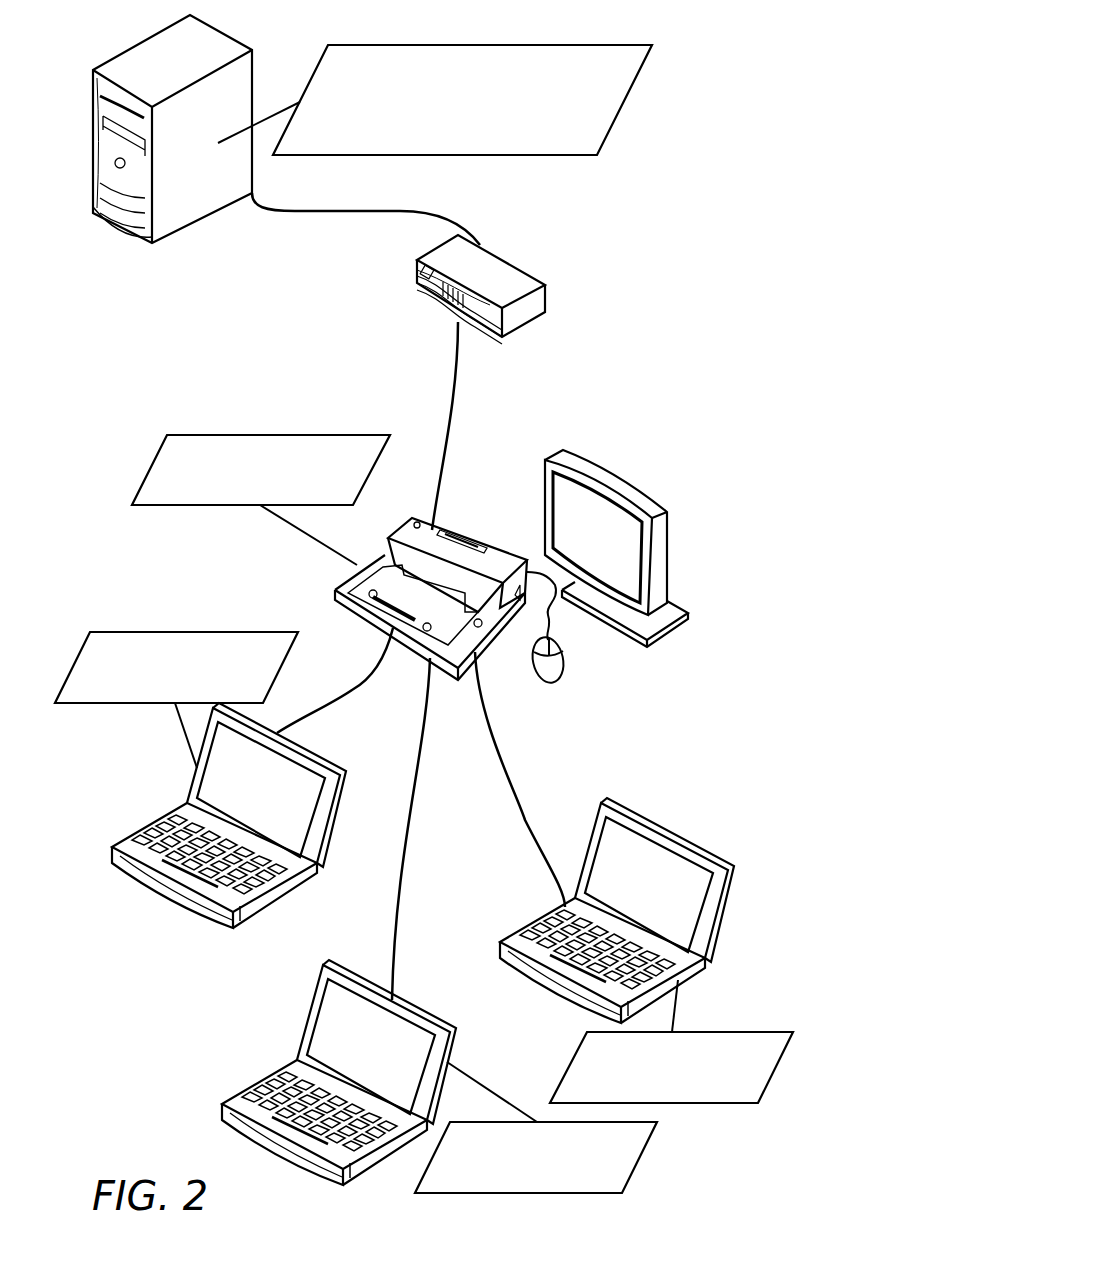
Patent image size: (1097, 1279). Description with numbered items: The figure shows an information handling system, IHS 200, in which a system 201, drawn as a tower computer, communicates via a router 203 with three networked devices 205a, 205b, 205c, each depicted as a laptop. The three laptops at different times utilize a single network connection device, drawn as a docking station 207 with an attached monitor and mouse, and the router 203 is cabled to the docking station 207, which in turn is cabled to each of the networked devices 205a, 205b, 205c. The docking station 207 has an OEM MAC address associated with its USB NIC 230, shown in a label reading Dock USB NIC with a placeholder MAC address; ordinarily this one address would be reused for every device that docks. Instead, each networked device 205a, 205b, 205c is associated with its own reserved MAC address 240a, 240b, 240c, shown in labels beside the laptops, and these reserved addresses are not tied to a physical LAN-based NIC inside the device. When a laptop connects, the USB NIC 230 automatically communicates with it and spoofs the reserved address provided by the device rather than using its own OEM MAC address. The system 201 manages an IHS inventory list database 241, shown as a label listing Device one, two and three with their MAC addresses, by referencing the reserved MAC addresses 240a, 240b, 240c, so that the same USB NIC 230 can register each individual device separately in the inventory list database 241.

The IHS 200 is at (802, 32).
The system 201 is at (190, 227).
The router 203 is at (525, 268).
The docking station 207 is at (463, 543).
The USB NIC 230 is at (353, 432).
The IHS inventory list database 241 is at (627, 97).
The networked device 205a is at (307, 752).
The networked device 205b is at (687, 848).
The networked device 205c is at (415, 1002).
The reserved MAC address 240a is at (148, 632).
The reserved MAC address 240b is at (757, 1032).
The reserved MAC address 240c is at (642, 1157).